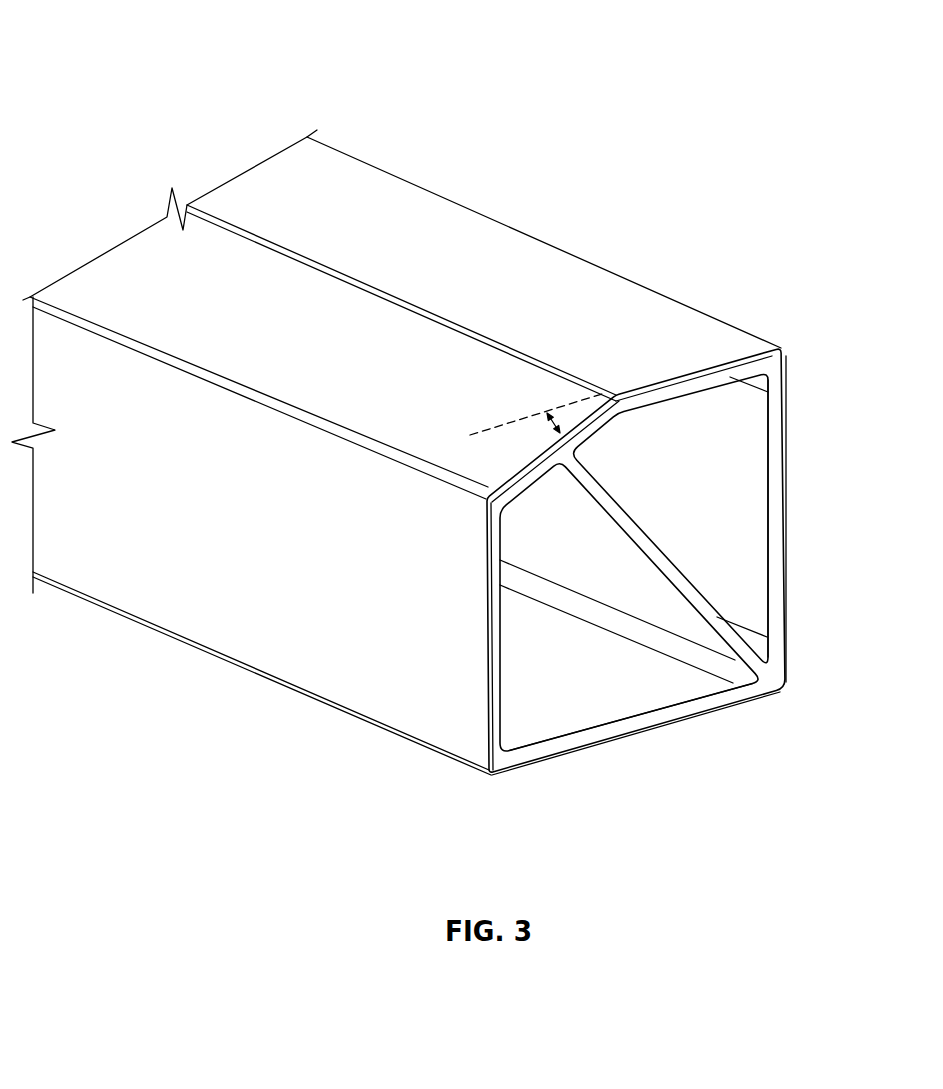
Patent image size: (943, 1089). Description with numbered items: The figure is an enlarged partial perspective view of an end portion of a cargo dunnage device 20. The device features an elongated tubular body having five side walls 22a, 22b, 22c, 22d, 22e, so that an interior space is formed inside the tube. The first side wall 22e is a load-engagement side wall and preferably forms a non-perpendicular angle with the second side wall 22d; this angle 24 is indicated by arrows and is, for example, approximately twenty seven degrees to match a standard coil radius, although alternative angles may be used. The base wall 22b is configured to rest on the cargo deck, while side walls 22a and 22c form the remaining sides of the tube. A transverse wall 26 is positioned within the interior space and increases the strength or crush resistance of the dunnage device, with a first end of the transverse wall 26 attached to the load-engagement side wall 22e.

The cargo dunnage device 20 is at (443, 433).
The side wall 22a is at (299, 529).
The base wall 22b is at (602, 747).
The side wall 22c is at (785, 520).
The second side wall 22d is at (569, 311).
The first side wall 22e is at (383, 367).
The angle 24 is at (550, 422).
The transverse wall 26 is at (580, 545).